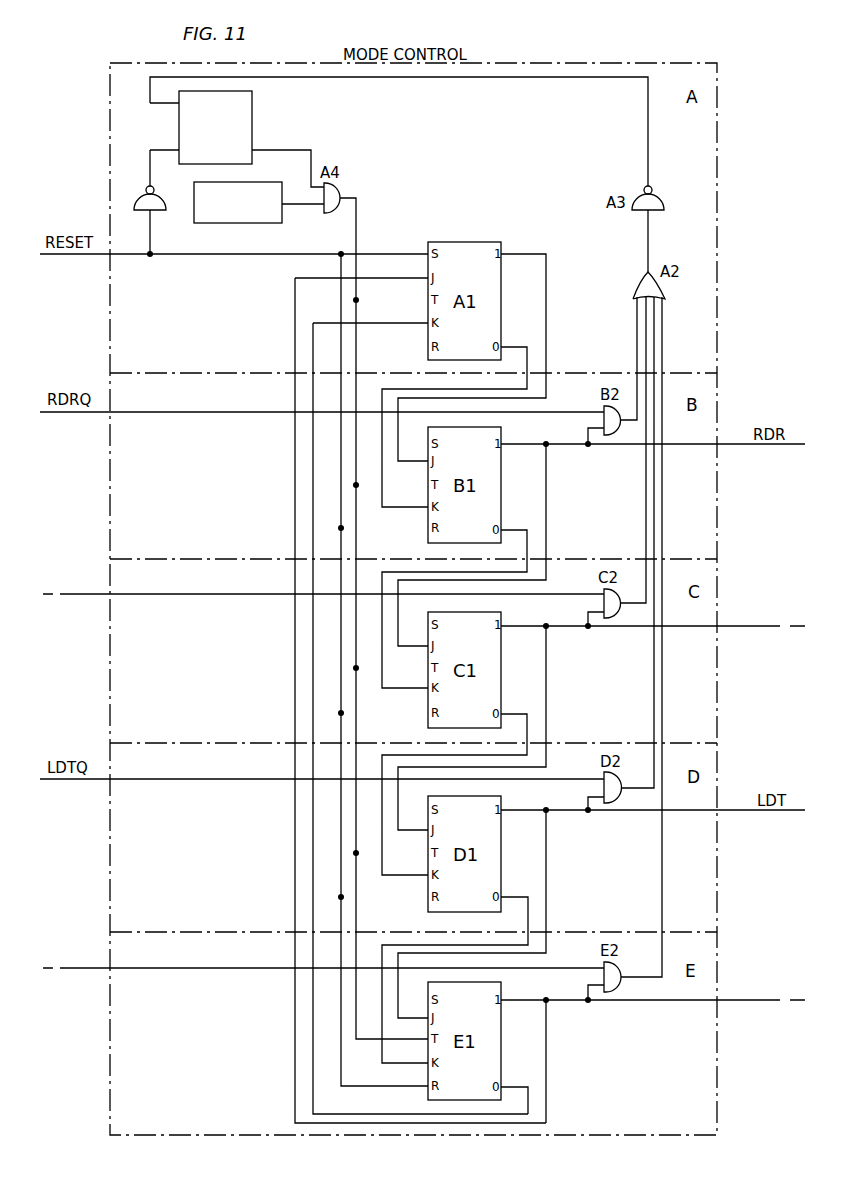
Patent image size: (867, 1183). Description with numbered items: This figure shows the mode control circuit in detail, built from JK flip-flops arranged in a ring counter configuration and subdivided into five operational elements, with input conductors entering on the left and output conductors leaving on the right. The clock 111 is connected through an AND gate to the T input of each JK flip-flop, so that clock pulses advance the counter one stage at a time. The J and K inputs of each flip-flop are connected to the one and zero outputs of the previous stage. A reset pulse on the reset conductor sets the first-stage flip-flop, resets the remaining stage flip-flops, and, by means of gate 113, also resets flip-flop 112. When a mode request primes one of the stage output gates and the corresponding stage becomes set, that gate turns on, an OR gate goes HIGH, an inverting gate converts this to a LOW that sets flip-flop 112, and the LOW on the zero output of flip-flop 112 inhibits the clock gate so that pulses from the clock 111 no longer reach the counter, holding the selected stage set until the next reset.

The clock 111 is at (280, 222).
The flip-flop 112 is at (252, 100).
The gate 113 is at (130, 197).